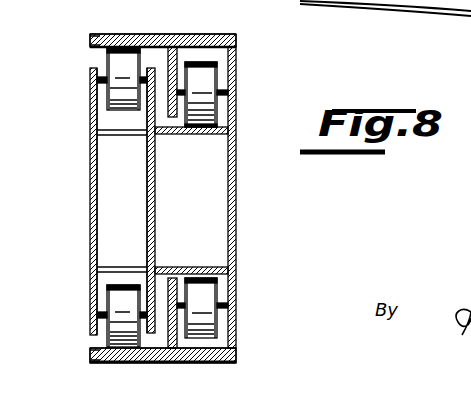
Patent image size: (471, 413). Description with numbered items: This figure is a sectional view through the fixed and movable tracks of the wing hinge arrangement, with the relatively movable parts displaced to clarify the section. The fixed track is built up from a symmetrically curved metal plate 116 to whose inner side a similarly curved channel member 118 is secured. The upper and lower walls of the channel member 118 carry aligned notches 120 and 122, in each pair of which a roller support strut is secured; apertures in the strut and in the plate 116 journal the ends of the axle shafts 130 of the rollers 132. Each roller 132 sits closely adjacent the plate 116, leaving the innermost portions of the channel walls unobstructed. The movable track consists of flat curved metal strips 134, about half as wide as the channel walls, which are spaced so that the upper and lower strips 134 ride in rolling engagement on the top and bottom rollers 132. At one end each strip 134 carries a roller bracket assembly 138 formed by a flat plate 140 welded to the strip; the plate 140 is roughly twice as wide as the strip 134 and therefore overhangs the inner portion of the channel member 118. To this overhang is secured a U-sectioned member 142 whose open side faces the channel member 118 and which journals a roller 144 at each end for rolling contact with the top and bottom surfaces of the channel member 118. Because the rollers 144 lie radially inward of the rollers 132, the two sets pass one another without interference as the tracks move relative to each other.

The curved metal plate 116 is at (90, 172).
The channel member 118 is at (236, 173).
The notch 120 is at (155, 228).
The notch 122 is at (155, 141).
The axle shaft 130 is at (90, 79).
The roller 132 is at (122, 60).
The track strip 134 is at (90, 45).
The roller bracket assembly 138 is at (188, 33).
The flat plate 140 is at (152, 34).
The U-sectioned member 142 is at (236, 62).
The roller 144 is at (213, 77).